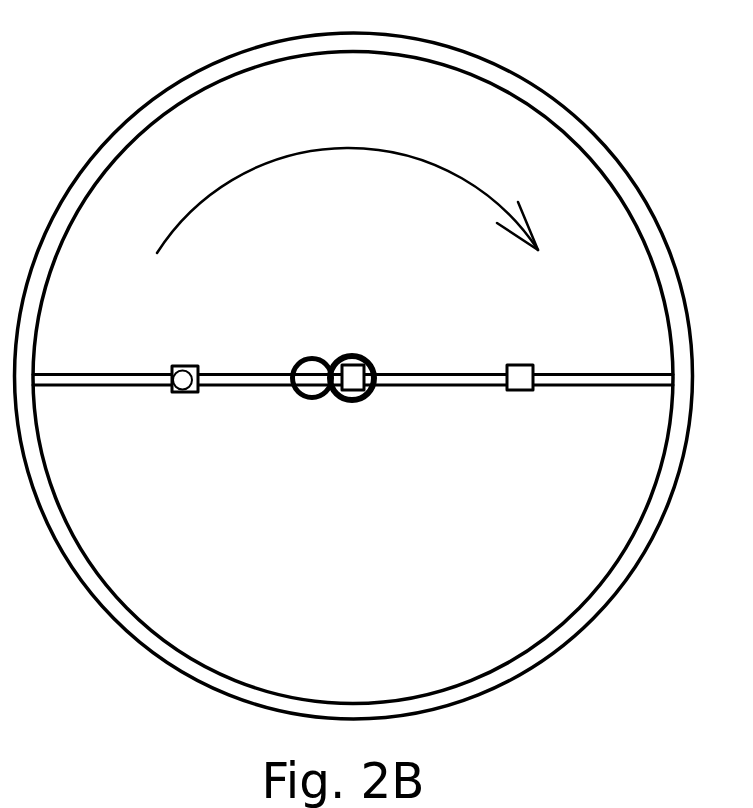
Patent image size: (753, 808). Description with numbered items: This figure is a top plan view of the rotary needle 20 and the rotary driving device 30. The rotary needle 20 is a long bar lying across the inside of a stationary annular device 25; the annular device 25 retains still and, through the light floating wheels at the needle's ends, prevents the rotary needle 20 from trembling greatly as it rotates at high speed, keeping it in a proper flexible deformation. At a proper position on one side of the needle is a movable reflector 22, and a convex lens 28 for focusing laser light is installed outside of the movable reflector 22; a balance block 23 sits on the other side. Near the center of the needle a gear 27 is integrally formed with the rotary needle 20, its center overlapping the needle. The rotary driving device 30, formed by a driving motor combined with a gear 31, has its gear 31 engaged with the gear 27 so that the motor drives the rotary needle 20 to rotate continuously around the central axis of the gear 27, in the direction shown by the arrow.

The rotary needle 20 is at (583, 373).
The movable reflector 22 is at (193, 393).
The balance block 23 is at (516, 382).
The annular device 25 is at (679, 420).
The gear 27 is at (362, 365).
The convex lens 28 is at (183, 366).
The rotary driving device 30 is at (311, 400).
The gear 31 is at (310, 357).